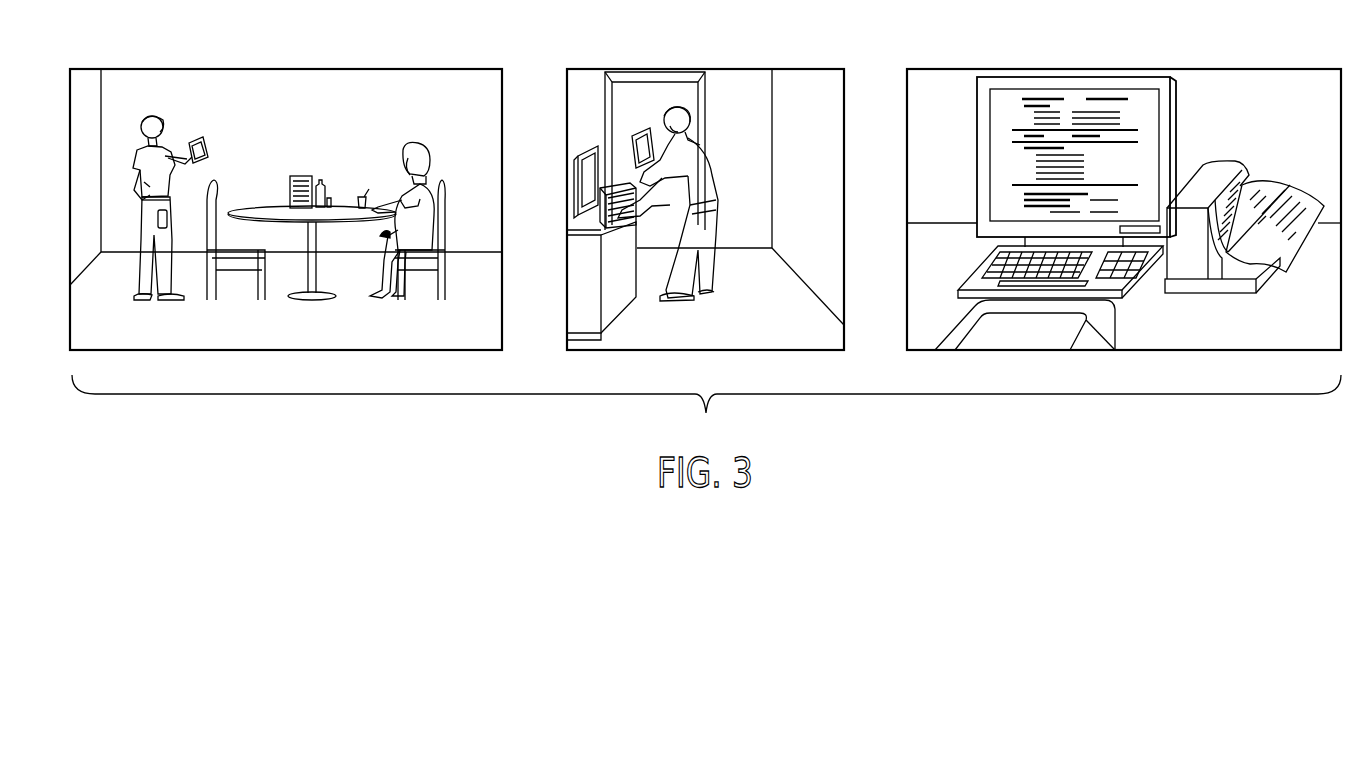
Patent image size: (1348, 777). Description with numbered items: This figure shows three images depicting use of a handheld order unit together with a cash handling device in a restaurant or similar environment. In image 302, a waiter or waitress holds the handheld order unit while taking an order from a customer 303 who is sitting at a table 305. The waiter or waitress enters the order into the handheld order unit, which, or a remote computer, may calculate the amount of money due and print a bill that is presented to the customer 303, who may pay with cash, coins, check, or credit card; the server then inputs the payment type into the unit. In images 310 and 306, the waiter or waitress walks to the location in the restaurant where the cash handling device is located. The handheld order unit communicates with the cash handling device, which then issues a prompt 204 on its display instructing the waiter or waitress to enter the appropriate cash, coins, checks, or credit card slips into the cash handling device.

The prompt 204 is at (1013, 106).
The image 302 is at (376, 87).
The customer 303 is at (418, 146).
The table 305 is at (273, 210).
The image 306 is at (1269, 80).
The image 310 is at (799, 87).